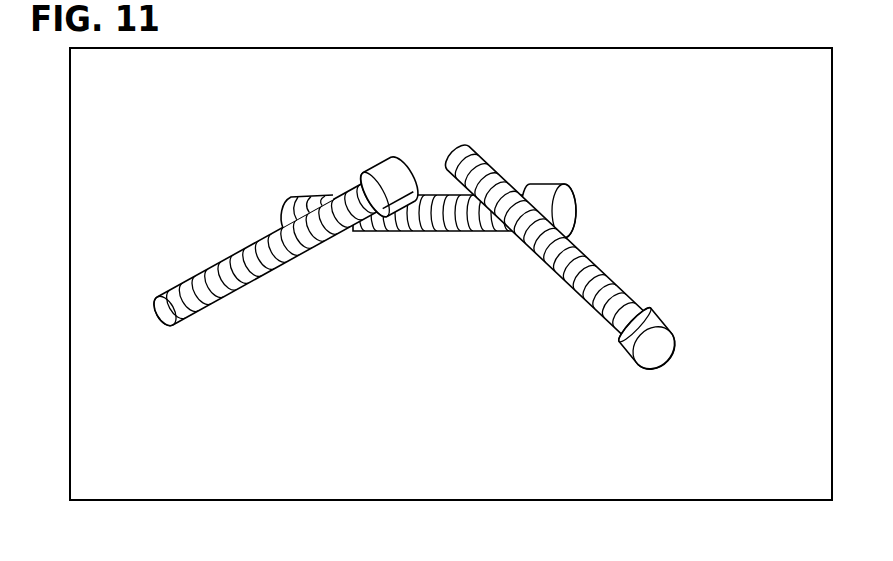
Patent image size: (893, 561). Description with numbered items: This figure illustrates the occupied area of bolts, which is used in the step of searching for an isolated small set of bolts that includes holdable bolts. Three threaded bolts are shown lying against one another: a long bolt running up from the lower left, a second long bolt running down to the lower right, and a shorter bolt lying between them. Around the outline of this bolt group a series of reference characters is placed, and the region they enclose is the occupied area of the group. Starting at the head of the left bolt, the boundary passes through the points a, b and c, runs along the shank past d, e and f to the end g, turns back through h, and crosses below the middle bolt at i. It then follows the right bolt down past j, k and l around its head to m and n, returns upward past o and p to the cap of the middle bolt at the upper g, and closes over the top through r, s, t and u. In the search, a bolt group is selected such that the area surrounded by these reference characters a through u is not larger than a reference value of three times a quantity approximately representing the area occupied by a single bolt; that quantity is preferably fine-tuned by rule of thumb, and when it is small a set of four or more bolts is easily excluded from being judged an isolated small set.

The occupied area boundary point a is at (361, 152).
The occupied area boundary point b is at (361, 164).
The occupied area boundary point c is at (364, 172).
The occupied area boundary point d is at (286, 204).
The occupied area boundary point e is at (270, 210).
The occupied area boundary point f is at (282, 228).
The occupied area boundary point g is at (369, 204).
The occupied area boundary point h is at (439, 176).
The occupied area boundary point i is at (443, 172).
The occupied area boundary point j is at (634, 335).
The occupied area boundary point k is at (636, 335).
The occupied area boundary point l is at (661, 335).
The occupied area boundary point m is at (668, 315).
The occupied area boundary point n is at (652, 310).
The occupied area boundary point o is at (573, 234).
The occupied area boundary point p is at (574, 192).
The occupied area boundary point r is at (583, 256).
The occupied area boundary point s is at (446, 193).
The occupied area boundary point t is at (443, 147).
The occupied area boundary point u is at (443, 147).